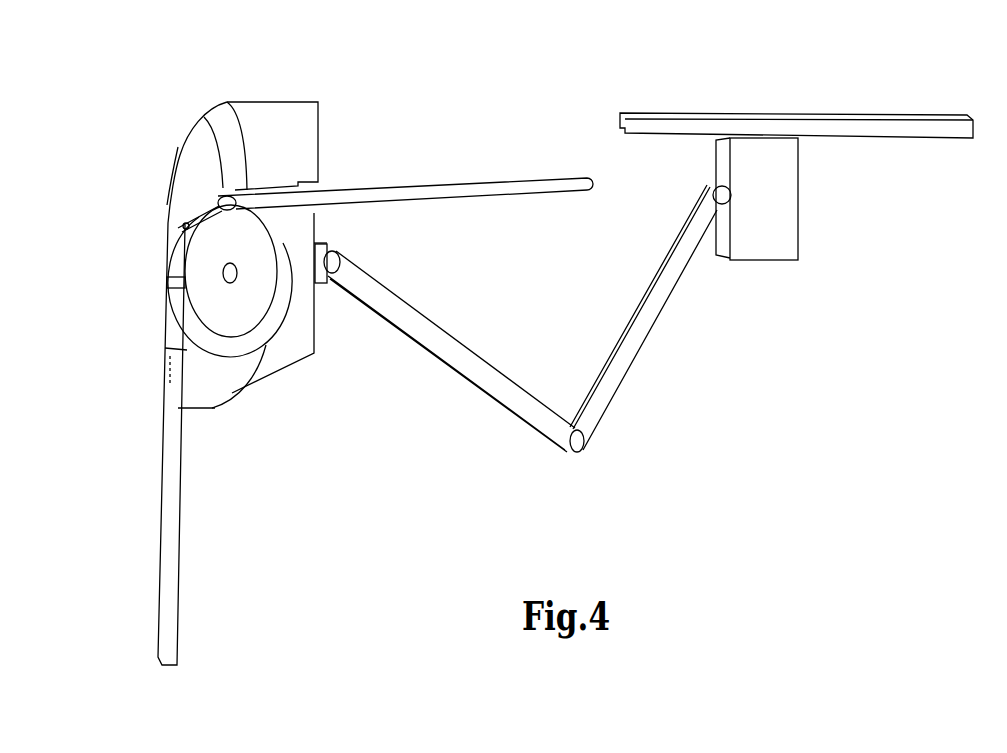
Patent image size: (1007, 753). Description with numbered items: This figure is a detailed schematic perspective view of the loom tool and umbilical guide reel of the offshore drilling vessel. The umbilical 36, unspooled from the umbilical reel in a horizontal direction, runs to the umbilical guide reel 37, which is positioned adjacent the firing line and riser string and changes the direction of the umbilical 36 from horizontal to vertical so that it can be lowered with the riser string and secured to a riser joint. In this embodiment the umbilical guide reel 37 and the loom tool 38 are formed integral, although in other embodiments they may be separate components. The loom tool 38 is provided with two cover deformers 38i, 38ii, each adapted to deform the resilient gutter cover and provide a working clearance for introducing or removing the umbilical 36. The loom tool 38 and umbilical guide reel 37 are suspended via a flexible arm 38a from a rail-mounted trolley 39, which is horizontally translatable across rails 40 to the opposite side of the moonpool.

The umbilical 36 is at (475, 188).
The umbilical guide reel 37 is at (231, 271).
The loom tool 38 is at (246, 255).
The cover deformer 38i is at (193, 444).
The cover deformer 38ii is at (207, 167).
The flexible arm 38a is at (473, 360).
The rail-mounted trolley 39 is at (755, 199).
The rails 40 is at (850, 126).